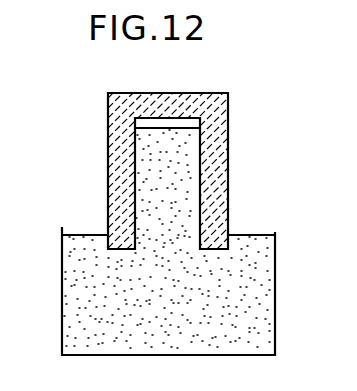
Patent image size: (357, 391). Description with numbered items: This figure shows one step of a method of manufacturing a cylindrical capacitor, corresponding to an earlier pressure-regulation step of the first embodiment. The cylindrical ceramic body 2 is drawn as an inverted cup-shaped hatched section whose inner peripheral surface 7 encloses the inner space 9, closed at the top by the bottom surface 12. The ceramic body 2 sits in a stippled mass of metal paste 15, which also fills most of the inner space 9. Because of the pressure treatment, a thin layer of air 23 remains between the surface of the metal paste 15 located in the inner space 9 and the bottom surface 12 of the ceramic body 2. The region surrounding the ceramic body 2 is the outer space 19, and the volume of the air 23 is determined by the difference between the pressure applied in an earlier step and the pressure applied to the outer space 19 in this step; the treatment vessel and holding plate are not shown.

The cylindrical ceramic body 2 is at (228, 132).
The inner peripheral surface 7 is at (193, 184).
The inner space 9 is at (152, 163).
The bottom surface 12 is at (173, 121).
The metal paste 15 is at (243, 248).
The outer space 19 is at (98, 194).
The air 23 is at (138, 119).